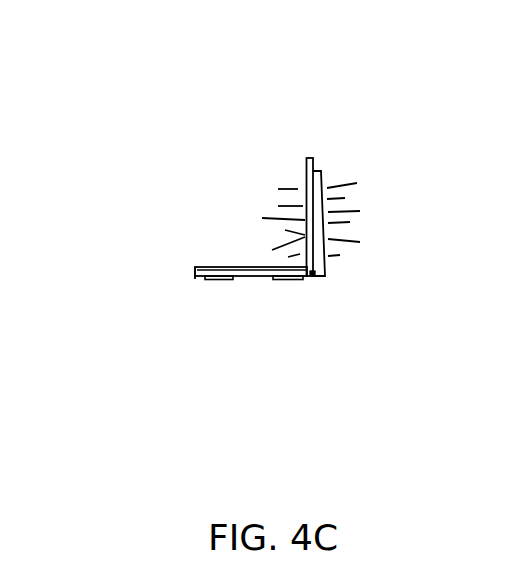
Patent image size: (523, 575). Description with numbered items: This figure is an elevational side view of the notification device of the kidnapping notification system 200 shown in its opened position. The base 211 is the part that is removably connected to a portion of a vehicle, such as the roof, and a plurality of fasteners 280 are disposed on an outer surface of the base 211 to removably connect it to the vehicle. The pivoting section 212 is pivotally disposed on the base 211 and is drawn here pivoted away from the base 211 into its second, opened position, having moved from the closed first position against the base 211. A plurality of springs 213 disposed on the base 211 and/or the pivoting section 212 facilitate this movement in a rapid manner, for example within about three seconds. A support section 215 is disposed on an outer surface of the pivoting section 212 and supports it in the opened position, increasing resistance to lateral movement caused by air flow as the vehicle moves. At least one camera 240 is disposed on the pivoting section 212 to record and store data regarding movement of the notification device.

The kidnapping notification system 200 is at (153, 108).
The camera 240 is at (191, 266).
The pivoting section 212 is at (308, 158).
The support section 215 is at (326, 265).
The base 211 is at (198, 279).
The fasteners 280 is at (283, 281).
The springs 213 is at (313, 277).